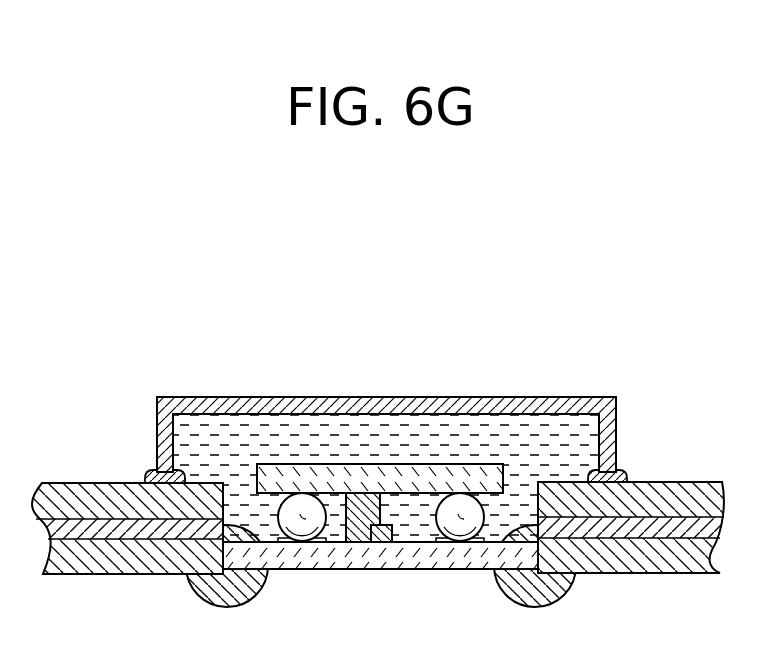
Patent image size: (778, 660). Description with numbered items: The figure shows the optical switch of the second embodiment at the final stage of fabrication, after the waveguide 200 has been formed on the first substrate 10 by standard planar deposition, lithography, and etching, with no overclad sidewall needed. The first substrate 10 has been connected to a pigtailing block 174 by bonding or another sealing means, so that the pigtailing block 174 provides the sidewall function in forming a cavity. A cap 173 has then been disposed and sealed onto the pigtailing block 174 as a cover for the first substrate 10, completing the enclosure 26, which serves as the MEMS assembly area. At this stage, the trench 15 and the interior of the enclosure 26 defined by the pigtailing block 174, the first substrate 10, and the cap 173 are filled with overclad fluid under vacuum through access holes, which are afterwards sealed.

The waveguide 200 is at (66, 384).
The enclosure 26 is at (190, 433).
The cap 173 is at (607, 440).
The pigtailing block 174 is at (100, 566).
The first substrate 10 is at (307, 569).
The trench 15 is at (388, 557).